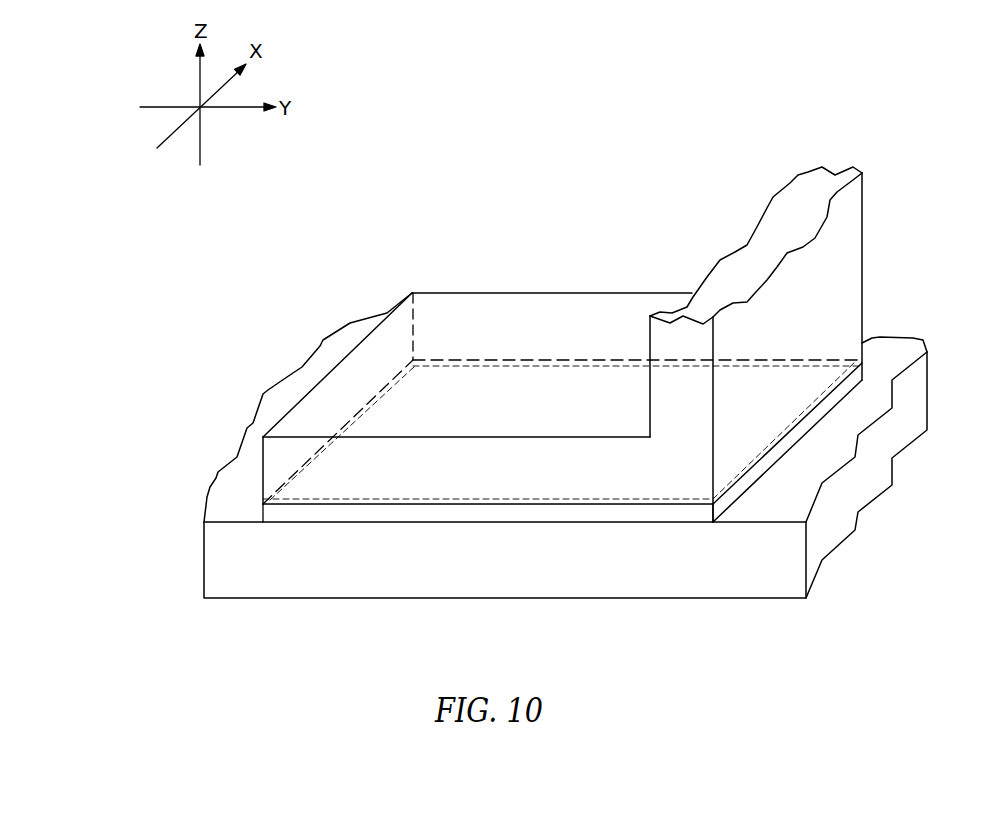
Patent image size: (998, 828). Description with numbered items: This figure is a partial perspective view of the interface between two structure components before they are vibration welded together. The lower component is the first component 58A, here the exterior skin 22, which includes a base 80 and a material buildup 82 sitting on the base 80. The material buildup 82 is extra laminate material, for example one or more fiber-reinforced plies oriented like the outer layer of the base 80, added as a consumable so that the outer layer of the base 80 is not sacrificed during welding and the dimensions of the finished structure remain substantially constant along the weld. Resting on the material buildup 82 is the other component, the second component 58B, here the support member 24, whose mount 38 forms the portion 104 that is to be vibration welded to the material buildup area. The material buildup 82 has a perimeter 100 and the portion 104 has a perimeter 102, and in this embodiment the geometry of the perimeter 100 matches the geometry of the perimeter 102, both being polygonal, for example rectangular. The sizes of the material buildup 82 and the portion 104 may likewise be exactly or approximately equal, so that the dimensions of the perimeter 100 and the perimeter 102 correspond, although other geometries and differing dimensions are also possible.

The exterior skin 22 is at (483, 486).
The first component 58A is at (483, 486).
The support member 24 is at (792, 295).
The second component 58B is at (852, 153).
The mount 38 is at (417, 349).
The base 80 is at (240, 582).
The material buildup 82 is at (291, 515).
The perimeter of material buildup 100 is at (615, 378).
The perimeter of portion 102 is at (827, 358).
The portion 104 is at (263, 469).